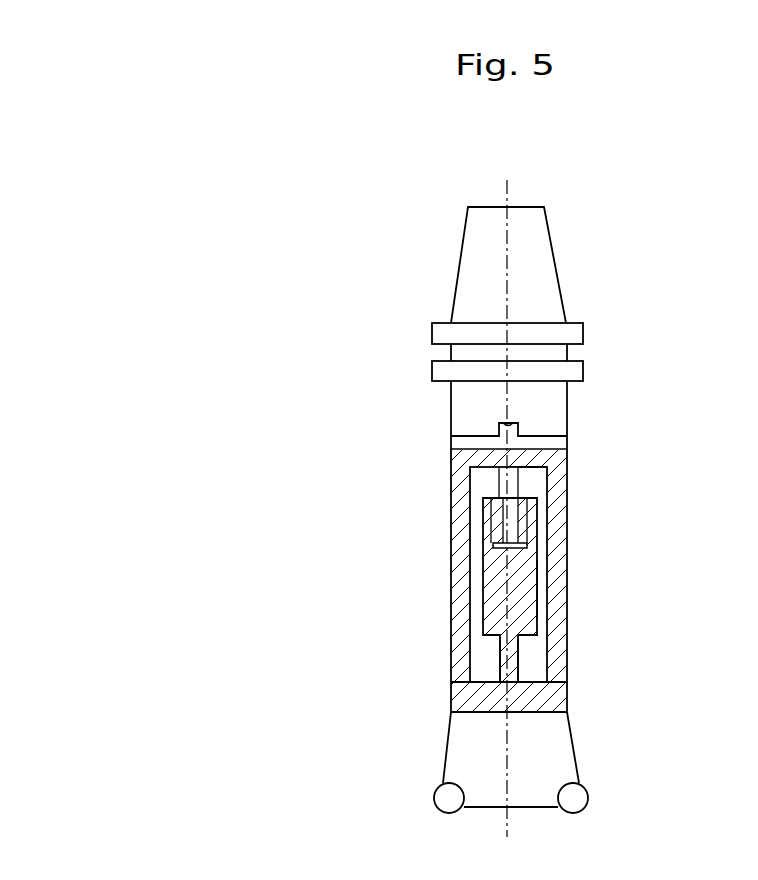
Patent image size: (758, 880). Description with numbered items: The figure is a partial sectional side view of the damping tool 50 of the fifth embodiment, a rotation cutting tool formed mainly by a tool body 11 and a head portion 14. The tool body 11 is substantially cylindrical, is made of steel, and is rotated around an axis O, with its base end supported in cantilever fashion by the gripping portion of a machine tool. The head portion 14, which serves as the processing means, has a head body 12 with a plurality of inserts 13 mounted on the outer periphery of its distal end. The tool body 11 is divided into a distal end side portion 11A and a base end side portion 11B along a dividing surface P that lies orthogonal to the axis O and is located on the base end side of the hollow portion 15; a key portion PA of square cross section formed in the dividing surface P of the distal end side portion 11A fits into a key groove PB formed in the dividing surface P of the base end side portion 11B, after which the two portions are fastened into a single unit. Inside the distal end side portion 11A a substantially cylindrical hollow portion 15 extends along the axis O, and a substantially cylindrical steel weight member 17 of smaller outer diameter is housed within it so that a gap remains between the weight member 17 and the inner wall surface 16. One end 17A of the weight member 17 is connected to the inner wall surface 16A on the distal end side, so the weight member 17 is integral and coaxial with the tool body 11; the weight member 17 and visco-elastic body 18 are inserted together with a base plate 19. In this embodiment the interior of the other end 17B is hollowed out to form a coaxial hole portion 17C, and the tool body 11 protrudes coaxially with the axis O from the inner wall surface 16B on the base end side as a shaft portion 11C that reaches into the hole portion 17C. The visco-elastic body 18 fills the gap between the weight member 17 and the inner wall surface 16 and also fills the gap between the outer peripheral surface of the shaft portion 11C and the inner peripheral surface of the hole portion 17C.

The axis O is at (507, 255).
The damping tool 50 is at (648, 390).
The tool body 11 is at (312, 377).
The distal end side portion 11A is at (451, 444).
The base end side portion 11B is at (451, 403).
The shaft portion 11C is at (502, 486).
The dividing surface P is at (571, 434).
The key portion PA is at (543, 448).
The key groove PB is at (508, 423).
The head body 12 is at (557, 745).
The inserts 13 is at (585, 800).
The head portion 14 is at (677, 713).
The hollow portion 15 is at (551, 588).
The inner wall surface 16 is at (534, 570).
The inner wall surface on the distal end side 16A is at (534, 681).
The inner wall surface on the base end side 16B is at (535, 480).
The weight member 17 is at (497, 602).
The end of the weight member 17A is at (500, 663).
The other end of the weight member 17B is at (484, 515).
The hole portion 17C is at (519, 515).
The visco-elastic body 18 is at (496, 543).
The base plate 19 is at (557, 697).